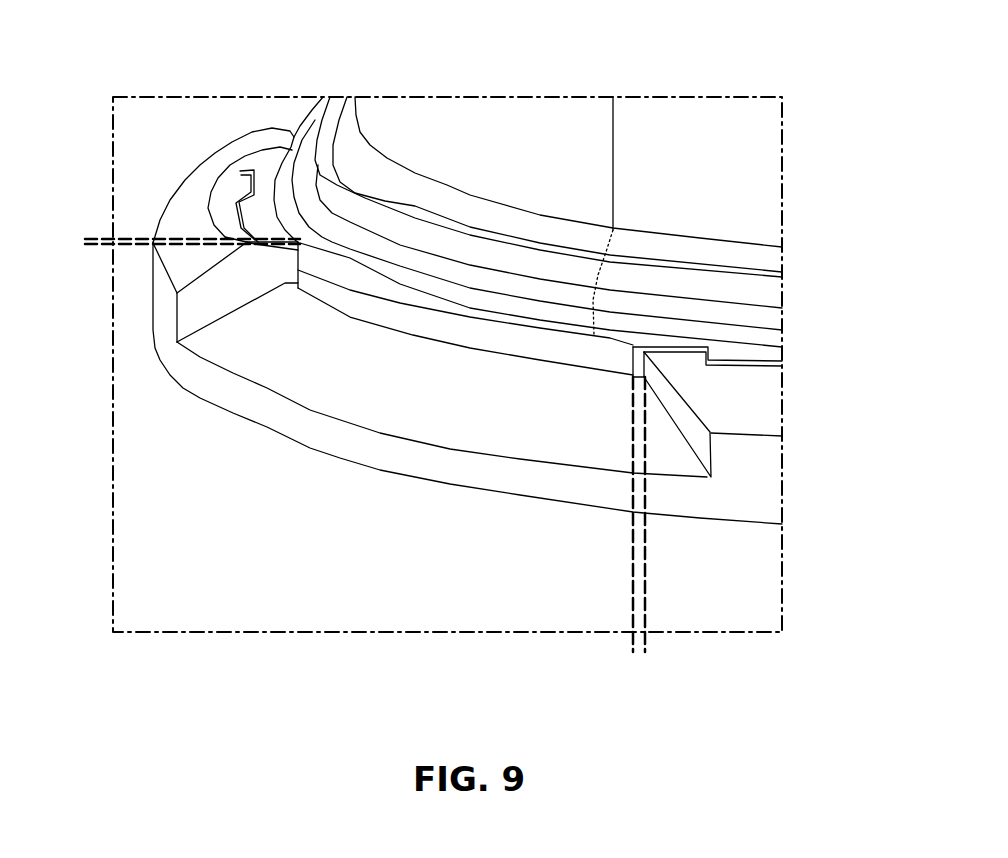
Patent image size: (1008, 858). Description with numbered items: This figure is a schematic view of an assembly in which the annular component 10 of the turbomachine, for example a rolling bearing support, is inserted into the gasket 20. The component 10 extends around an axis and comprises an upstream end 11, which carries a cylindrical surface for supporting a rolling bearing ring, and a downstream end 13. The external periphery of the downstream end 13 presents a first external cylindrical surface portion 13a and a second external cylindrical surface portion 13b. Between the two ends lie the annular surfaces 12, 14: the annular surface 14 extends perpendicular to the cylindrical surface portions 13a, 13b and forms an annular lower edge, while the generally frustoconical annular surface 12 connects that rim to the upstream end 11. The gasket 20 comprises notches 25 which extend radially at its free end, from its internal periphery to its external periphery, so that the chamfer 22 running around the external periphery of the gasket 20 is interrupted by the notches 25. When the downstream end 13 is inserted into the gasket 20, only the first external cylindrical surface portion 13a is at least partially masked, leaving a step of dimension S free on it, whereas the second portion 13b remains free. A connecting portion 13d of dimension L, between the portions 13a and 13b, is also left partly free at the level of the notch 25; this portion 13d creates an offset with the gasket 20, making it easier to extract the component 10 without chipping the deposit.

The annular component 10 is at (460, 86).
The upstream end 11 is at (578, 118).
The annular surface 12 is at (790, 303).
The downstream end 13 is at (790, 352).
The first external cylindrical surface portion 13a is at (245, 172).
The second external cylindrical surface portion 13b is at (413, 318).
The connecting portion 13d is at (640, 347).
The annular surface 14 is at (280, 160).
The gasket 20 is at (312, 493).
The chamfer 22 is at (762, 398).
The notch 25 is at (236, 347).
The step dimension S is at (78, 220).
The connecting portion dimension L is at (680, 657).